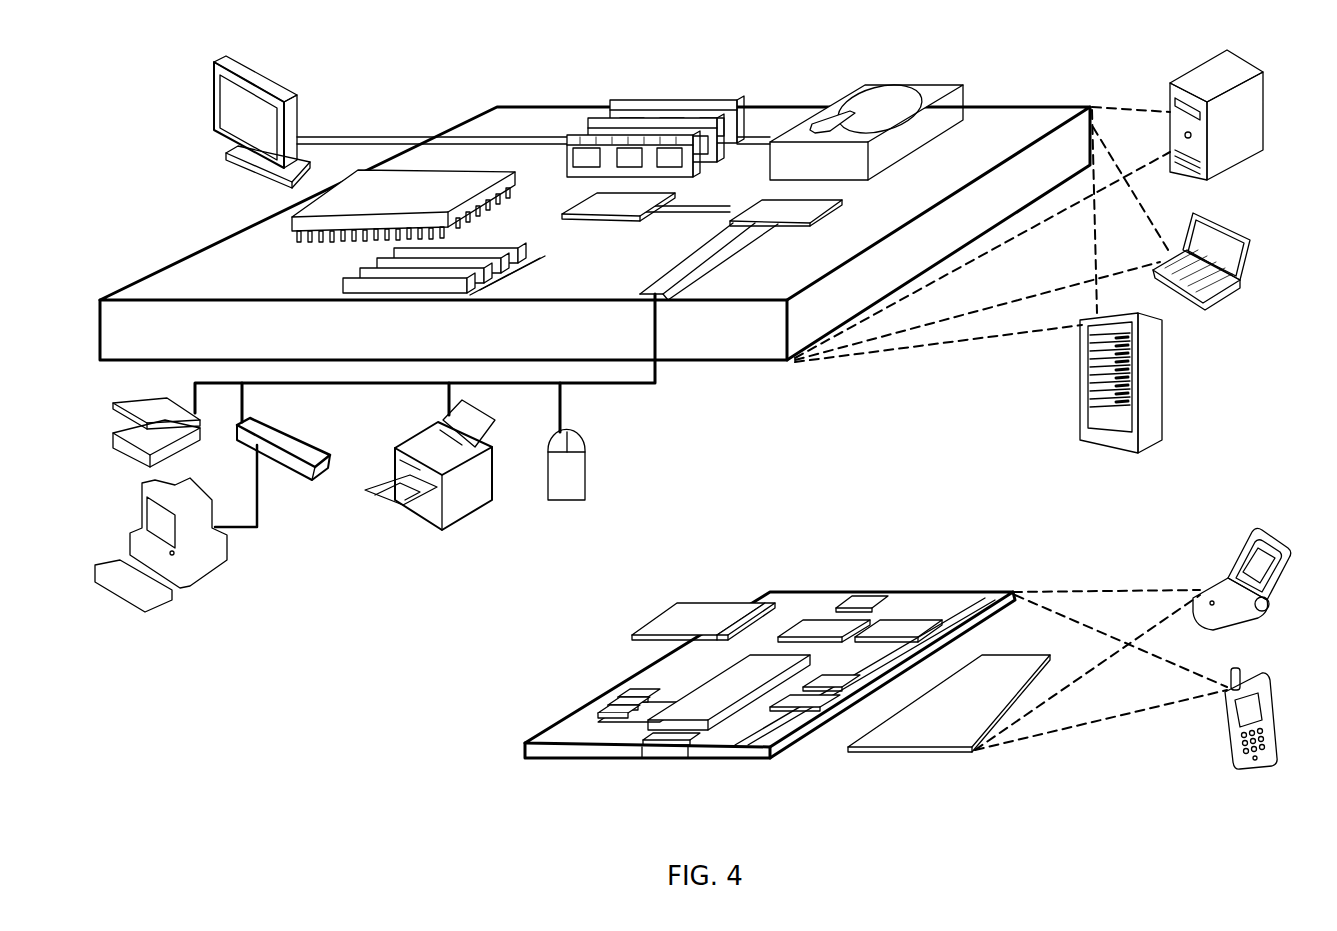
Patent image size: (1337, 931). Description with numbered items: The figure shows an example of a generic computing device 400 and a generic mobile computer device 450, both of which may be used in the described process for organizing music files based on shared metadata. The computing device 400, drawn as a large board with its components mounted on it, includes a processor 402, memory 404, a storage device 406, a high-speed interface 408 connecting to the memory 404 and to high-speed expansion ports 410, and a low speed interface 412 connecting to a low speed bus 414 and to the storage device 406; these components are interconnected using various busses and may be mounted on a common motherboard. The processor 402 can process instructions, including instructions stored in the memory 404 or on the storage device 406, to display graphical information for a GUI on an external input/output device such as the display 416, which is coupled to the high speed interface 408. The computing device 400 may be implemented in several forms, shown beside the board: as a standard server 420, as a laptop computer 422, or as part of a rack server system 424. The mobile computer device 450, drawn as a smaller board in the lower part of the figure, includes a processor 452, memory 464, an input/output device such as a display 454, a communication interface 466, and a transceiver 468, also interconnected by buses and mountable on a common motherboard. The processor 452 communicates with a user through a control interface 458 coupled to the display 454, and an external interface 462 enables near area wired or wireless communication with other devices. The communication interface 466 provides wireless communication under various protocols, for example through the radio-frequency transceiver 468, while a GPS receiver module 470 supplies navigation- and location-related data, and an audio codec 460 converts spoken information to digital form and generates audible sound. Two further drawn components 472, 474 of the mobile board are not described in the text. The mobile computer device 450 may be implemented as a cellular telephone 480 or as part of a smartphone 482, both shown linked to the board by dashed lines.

The computing device 400 is at (419, 78).
The processor 402 is at (295, 222).
The memory 404 is at (624, 104).
The storage device 406 is at (858, 86).
The high-speed interface 408 is at (590, 205).
The high-speed expansion ports 410 is at (362, 268).
The low speed interface 412 is at (782, 208).
The low speed bus 414 is at (672, 303).
The display 416 is at (214, 62).
The standard server 420 is at (1170, 84).
The laptop computer 422 is at (1192, 226).
The rack server system 424 is at (1082, 404).
The mobile computer device 450 is at (749, 568).
The processor 452 is at (712, 738).
The display 454 is at (976, 751).
The control interface 458 is at (820, 708).
The audio codec 460 is at (832, 688).
The external interface 462 is at (662, 760).
The memory 464 is at (600, 706).
The communication interface 466 is at (822, 622).
The transceiver 468 is at (902, 620).
The GPS receiver module 470 is at (862, 596).
The connector strip 472 is at (740, 602).
The module 474 is at (672, 602).
The cellular telephone 480 is at (1236, 508).
The smartphone 482 is at (1232, 670).